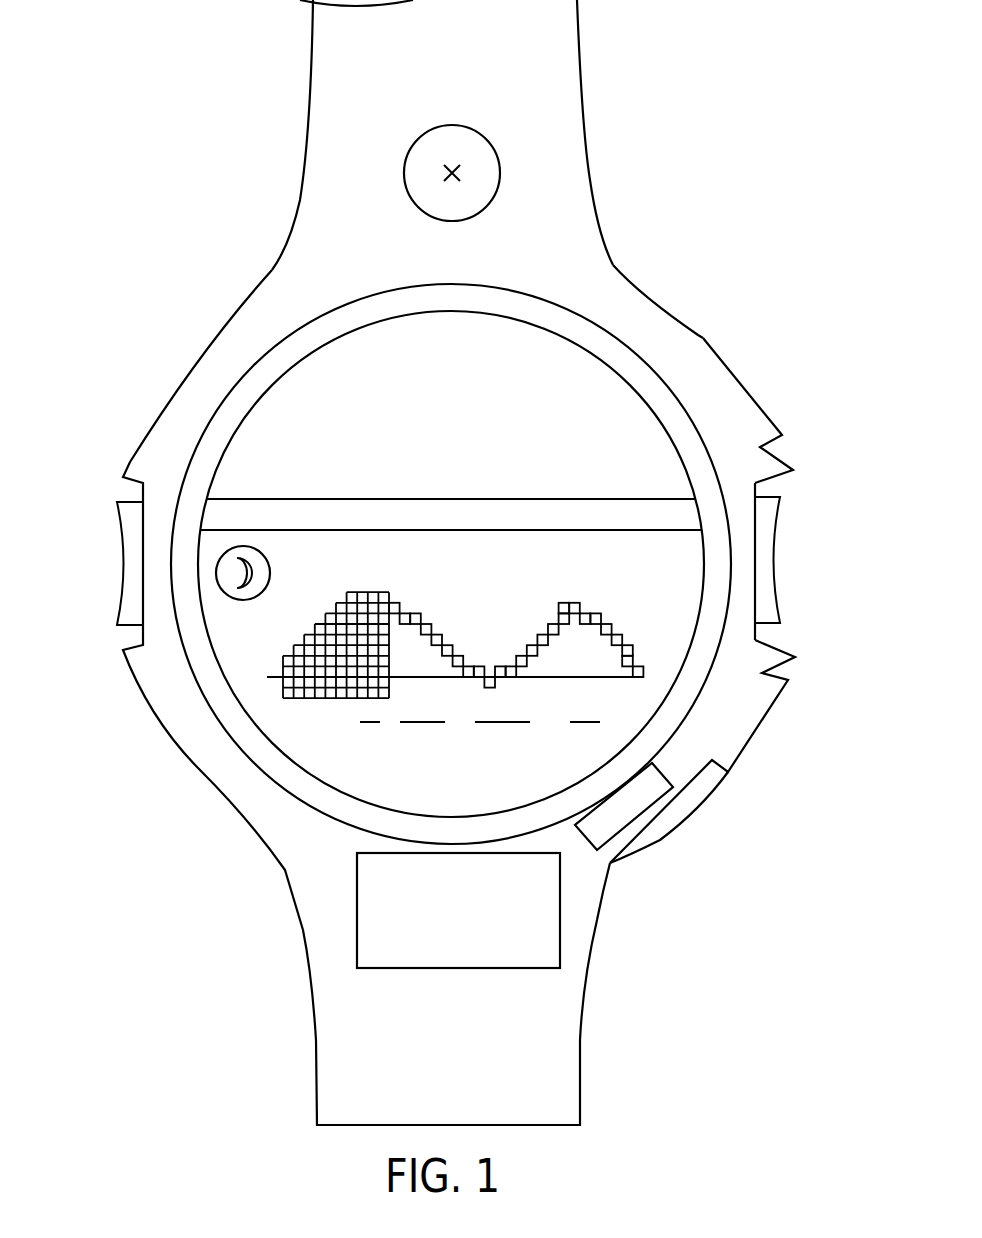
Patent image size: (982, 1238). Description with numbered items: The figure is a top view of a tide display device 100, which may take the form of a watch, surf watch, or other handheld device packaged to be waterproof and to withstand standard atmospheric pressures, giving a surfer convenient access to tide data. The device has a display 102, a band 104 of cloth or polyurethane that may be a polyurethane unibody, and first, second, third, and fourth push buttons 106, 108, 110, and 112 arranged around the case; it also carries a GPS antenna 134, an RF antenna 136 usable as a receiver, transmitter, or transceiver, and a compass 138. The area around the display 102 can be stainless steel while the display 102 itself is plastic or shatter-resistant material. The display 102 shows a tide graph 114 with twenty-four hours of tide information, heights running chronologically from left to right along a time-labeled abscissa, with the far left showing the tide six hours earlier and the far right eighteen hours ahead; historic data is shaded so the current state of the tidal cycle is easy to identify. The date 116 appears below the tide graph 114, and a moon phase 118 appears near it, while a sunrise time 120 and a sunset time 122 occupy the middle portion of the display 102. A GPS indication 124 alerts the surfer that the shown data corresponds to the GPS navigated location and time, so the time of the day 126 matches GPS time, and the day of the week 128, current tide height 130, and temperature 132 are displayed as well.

The tide display device 100 is at (216, 169).
The display 102 is at (565, 293).
The band 104 is at (582, 168).
The first push button 106 is at (104, 562).
The second push button 108 is at (742, 372).
The third push button 110 is at (797, 562).
The fourth push button 112 is at (765, 723).
The tide graph 114 is at (266, 656).
The date 116 is at (390, 772).
The moon phase 118 is at (224, 594).
The sunrise time 120 is at (612, 556).
The sunset time 122 is at (645, 597).
The GPS indication 124 is at (255, 415).
The time of the day 126 is at (443, 390).
The day of the week 128 is at (468, 295).
The current tide height 130 is at (570, 482).
The temperature 132 is at (670, 478).
The GPS antenna 134 is at (460, 968).
The RF antenna 136 is at (642, 815).
The compass 138 is at (490, 142).